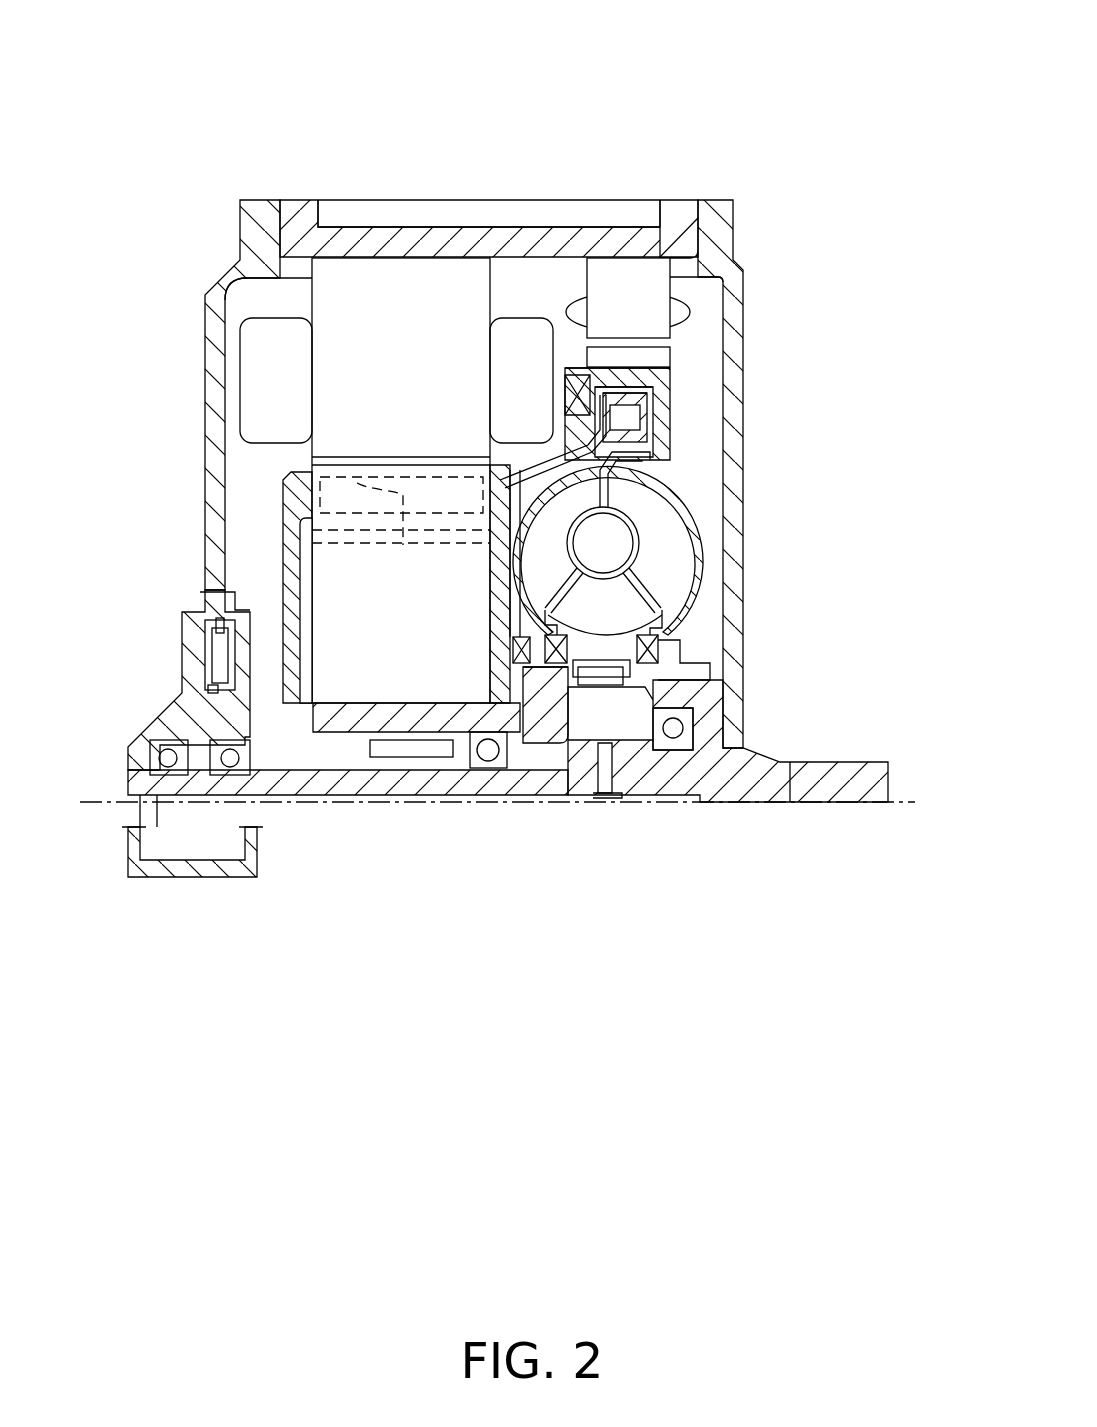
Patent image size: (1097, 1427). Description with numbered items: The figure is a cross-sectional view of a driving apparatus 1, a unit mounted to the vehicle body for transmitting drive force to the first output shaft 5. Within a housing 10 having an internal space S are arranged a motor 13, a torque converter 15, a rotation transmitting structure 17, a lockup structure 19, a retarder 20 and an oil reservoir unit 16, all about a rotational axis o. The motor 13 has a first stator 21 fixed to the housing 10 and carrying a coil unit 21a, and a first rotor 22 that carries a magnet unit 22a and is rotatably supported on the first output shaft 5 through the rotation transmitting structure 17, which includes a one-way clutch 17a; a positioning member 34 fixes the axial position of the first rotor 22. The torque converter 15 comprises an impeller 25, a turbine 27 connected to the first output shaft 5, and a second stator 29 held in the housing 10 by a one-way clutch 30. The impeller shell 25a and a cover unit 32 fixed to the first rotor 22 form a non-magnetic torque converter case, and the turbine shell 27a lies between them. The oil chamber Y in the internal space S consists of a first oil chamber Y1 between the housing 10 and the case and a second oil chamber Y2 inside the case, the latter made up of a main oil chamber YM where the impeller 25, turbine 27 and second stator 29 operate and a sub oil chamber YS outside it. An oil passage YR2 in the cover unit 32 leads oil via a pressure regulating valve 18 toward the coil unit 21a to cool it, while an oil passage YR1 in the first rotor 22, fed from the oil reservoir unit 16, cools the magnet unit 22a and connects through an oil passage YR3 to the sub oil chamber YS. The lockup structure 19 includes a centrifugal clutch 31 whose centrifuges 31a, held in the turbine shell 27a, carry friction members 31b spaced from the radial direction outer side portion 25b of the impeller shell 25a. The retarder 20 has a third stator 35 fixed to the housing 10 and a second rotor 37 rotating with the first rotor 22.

The driving apparatus 1 is at (760, 128).
The housing 10 is at (750, 197).
The retarder 20 is at (708, 257).
The third stator 35 is at (682, 290).
The second rotor 37 is at (660, 312).
The positioning member 34 is at (293, 628).
The magnet unit 22a is at (320, 582).
The rotation transmitting structure 17 is at (392, 777).
The one-way clutch 17a is at (350, 758).
The oil reservoir unit 16 is at (148, 900).
The first output shaft 5 is at (762, 790).
The cover unit 32 is at (483, 618).
The one-way clutch 30 is at (607, 680).
The turbine shell 27a is at (523, 665).
The motor 13 is at (308, 390).
The pressure regulating valve 18 is at (540, 415).
The first stator 21 is at (242, 382).
The coil unit 21a is at (513, 340).
The first rotor 22 is at (217, 587).
The internal space S is at (246, 492).
The oil chamber Y is at (354, 254).
The first oil chamber Y1 is at (250, 300).
The second oil chamber Y2 is at (510, 493).
The oil passage YR1 is at (320, 582).
The oil passage YR2 is at (580, 478).
The oil passage YR3 is at (545, 665).
The sub oil chamber YS is at (543, 488).
The lockup structure 19 is at (631, 268).
The centrifugal clutch 31 is at (627, 380).
The radial direction outer side portion 25b is at (590, 393).
The friction member 31b is at (672, 372).
The centrifuge 31a is at (650, 400).
The impeller shell 25a is at (633, 420).
The torque converter 15 is at (708, 562).
The impeller 25 is at (702, 583).
The turbine 27 is at (590, 528).
The main oil chamber YM is at (625, 530).
The second stator 29 is at (660, 623).
The rotational axis o is at (501, 801).